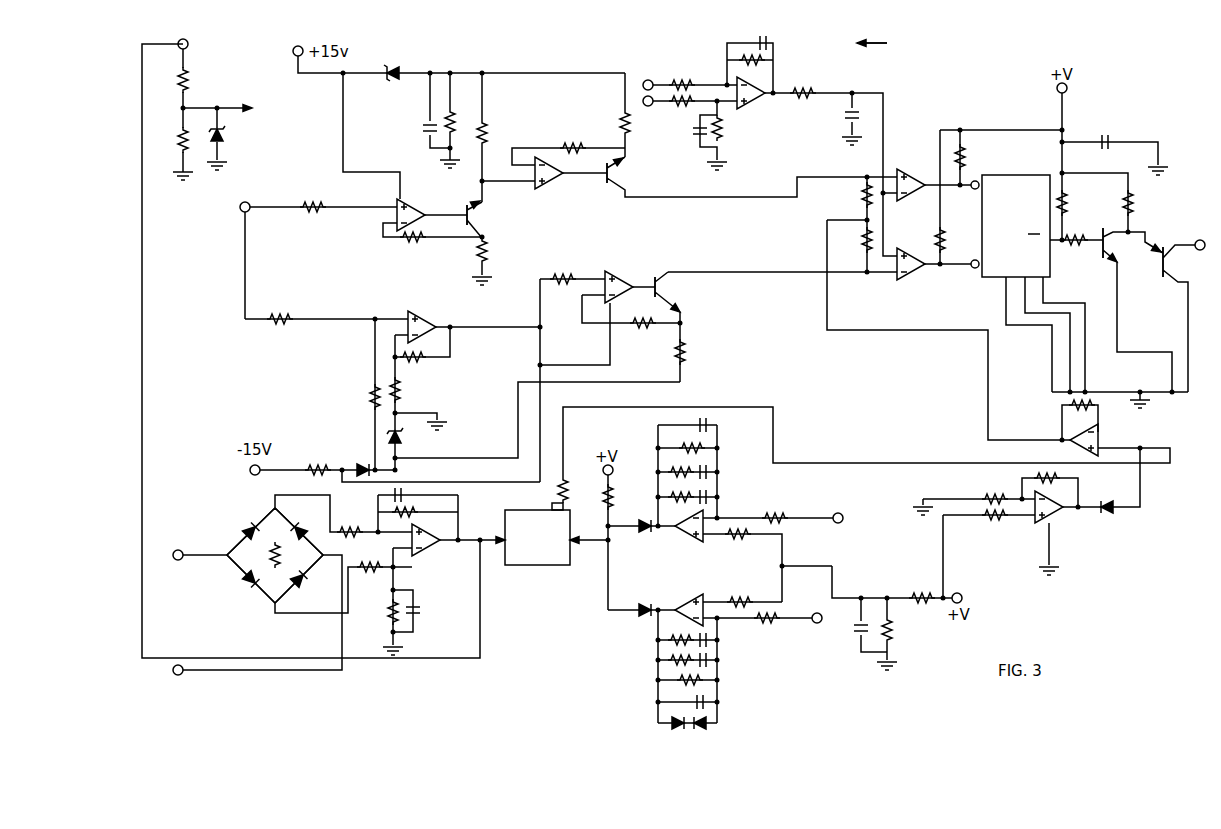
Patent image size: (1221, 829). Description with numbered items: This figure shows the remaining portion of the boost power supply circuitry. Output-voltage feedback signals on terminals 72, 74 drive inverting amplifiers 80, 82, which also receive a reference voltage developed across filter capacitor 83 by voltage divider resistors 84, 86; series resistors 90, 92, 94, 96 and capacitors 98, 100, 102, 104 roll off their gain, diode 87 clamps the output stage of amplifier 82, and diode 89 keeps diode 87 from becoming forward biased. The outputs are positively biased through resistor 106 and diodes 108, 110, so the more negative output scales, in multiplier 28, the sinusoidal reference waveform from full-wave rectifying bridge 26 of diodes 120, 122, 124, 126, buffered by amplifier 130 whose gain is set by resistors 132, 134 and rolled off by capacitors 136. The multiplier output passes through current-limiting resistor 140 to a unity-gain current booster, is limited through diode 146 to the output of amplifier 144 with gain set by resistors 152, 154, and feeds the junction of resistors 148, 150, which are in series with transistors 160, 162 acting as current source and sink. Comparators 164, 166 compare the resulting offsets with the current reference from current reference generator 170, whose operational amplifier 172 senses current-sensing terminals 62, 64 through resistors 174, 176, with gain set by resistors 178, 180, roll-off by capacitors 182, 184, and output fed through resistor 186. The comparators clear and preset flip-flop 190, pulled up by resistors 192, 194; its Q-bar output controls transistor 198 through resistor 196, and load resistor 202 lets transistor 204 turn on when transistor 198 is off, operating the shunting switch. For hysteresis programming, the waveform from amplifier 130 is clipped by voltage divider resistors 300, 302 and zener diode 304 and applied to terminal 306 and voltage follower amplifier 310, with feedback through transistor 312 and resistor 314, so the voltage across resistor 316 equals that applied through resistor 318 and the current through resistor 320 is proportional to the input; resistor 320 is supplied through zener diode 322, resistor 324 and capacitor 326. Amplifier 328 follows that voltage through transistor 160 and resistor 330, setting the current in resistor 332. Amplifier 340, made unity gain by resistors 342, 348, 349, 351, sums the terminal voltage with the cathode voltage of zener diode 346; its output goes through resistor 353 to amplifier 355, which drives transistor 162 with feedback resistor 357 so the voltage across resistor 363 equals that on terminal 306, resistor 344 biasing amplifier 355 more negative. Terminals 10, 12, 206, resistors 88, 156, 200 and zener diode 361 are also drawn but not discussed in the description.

The input terminal 10 is at (179, 550).
The input terminal 12 is at (181, 675).
The full-wave rectifying bridge 26 is at (225, 503).
The multiplier 28 is at (545, 568).
The current-sensing terminal 62 is at (649, 73).
The current-sensing terminal 64 is at (644, 114).
The terminal 72 is at (825, 628).
The terminal 74 is at (840, 512).
The inverting amplifier 80 is at (690, 542).
The inverting amplifier 82 is at (690, 596).
The filter capacitor 83 is at (857, 626).
The voltage divider resistor 84 is at (928, 592).
The voltage divider resistor 86 is at (892, 630).
The diode 87 is at (708, 727).
The resistor 88 is at (778, 623).
The diode 89 is at (668, 727).
The resistor 90 is at (672, 450).
The resistor 92 is at (778, 512).
The resistor 94 is at (665, 499).
The resistor 96 is at (665, 474).
The capacitor 98 is at (711, 661).
The capacitor 100 is at (711, 641).
The capacitor 102 is at (709, 497).
The capacitor 104 is at (709, 472).
The resistor 106 is at (612, 498).
The diode 108 is at (645, 534).
The diode 110 is at (645, 604).
The diode 120 is at (252, 523).
The diode 122 is at (245, 585).
The diode 124 is at (305, 586).
The diode 126 is at (305, 517).
The amplifier 130 is at (432, 553).
The resistor 132 is at (411, 511).
The resistor 134 is at (350, 525).
The capacitor 136 is at (430, 495).
The current-limiting resistor 140 is at (557, 485).
The amplifier 144 is at (1073, 449).
The diode 146 is at (1108, 515).
The resistor 148 is at (863, 197).
The resistor 150 is at (863, 246).
The resistor 152 is at (1062, 478).
The resistor 154 is at (996, 493).
The resistor 156 is at (996, 522).
The transistor 160 is at (628, 175).
The transistor 162 is at (670, 292).
The comparator 164 is at (918, 172).
The comparator 166 is at (918, 251).
The current reference generator 170 is at (889, 44).
The operational amplifier 172 is at (757, 105).
The resistor 174 is at (682, 79).
The resistor 176 is at (682, 107).
The resistor 178 is at (768, 62).
The resistor 180 is at (722, 133).
The capacitor 182 is at (768, 38).
The capacitor 184 is at (696, 136).
The resistor 186 is at (808, 88).
The flip-flop 190 is at (1034, 175).
The pull-up resistor 192 is at (962, 160).
The pull-up resistor 194 is at (942, 232).
The resistor 196 is at (1066, 204).
The transistor 198 is at (1099, 260).
The resistor 200 is at (1075, 247).
The load resistor 202 is at (1131, 200).
The transistor 204 is at (1161, 270).
The output terminal 206 is at (1200, 240).
The voltage divider resistor 300 is at (186, 77).
The voltage divider resistor 302 is at (180, 140).
The clipping zener diode 304 is at (223, 137).
The terminal 306 is at (247, 202).
The operational amplifier 310 is at (409, 200).
The transistor 312 is at (484, 222).
The resistor 314 is at (414, 244).
The resistor 316 is at (479, 254).
The resistor 318 is at (314, 213).
The resistor 320 is at (487, 135).
The zener diode 322 is at (392, 81).
The resistor 324 is at (452, 114).
The capacitor 326 is at (427, 129).
The amplifier 328 is at (550, 184).
The resistor 330 is at (573, 142).
The resistor 332 is at (620, 116).
The amplifier 340 is at (428, 314).
The resistor 342 is at (280, 313).
The resistor 344 is at (316, 463).
The zener diode 346 is at (362, 462).
The resistor 348 is at (372, 397).
The resistor 349 is at (422, 362).
The resistor 351 is at (400, 388).
The resistor 353 is at (565, 273).
The operational amplifier 355 is at (632, 276).
The feedback resistor 357 is at (645, 330).
The zener diode 361 is at (403, 438).
The resistor 363 is at (690, 354).